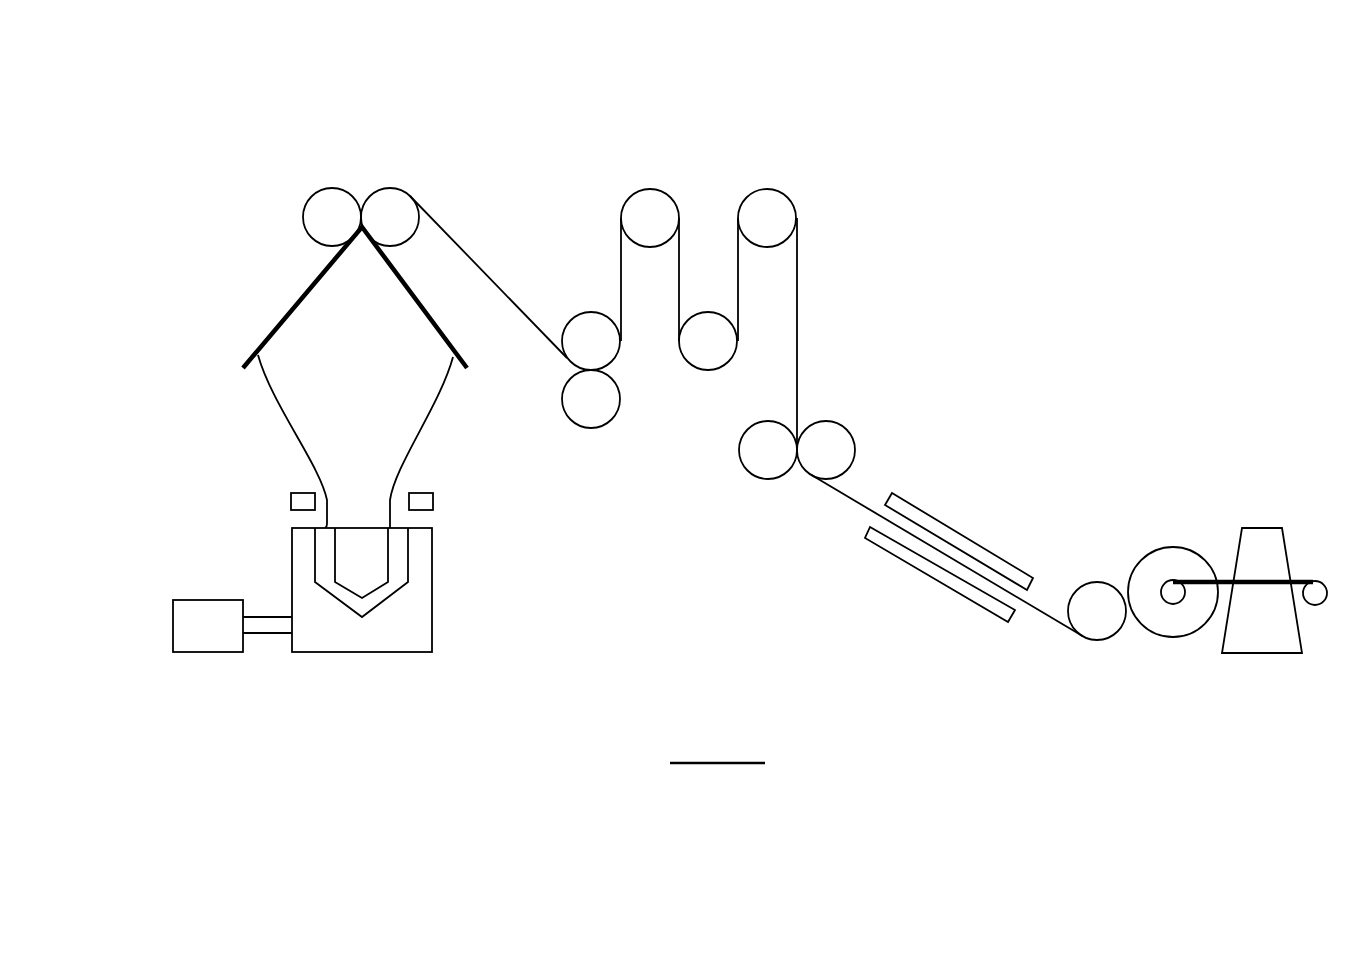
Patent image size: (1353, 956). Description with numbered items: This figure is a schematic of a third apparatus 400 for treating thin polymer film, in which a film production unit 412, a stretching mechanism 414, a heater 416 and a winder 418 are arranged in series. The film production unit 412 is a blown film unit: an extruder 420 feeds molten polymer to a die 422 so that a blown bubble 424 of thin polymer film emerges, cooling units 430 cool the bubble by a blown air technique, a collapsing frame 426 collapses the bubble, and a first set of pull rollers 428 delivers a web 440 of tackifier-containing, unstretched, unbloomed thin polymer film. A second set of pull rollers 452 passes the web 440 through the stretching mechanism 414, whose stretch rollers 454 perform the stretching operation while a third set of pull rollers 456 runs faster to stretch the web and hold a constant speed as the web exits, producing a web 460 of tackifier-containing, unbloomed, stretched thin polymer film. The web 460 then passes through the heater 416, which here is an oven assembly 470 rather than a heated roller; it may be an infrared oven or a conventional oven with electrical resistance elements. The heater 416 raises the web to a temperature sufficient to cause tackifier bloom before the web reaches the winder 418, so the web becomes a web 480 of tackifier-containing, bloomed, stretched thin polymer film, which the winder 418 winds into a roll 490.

The apparatus 400 is at (223, 113).
The film production unit 412 is at (162, 175).
The stretching mechanism 414 is at (822, 122).
The heater 416 is at (1060, 378).
The winder 418 is at (1337, 468).
The extruder 420 is at (231, 637).
The die 422 is at (370, 547).
The blown bubble 424 is at (433, 453).
The collapsing frame 426 is at (278, 312).
The first set of pull rollers 428 is at (362, 180).
The cooling units 430 is at (307, 493).
The web of tackifier-containing, unstretched, unbloomed thin polymer film 440 is at (483, 250).
The second set of pull rollers 452 is at (560, 372).
The stretch rollers 454 is at (755, 213).
The third set of pull rollers 456 is at (777, 487).
The web of tackifier-containing, unbloomed, stretched thin polymer film 460 is at (843, 507).
The oven assembly 470 is at (990, 543).
The web of tackifier-containing, bloomed, stretched thin polymer film 480 is at (1052, 580).
The roll 490 is at (1168, 625).